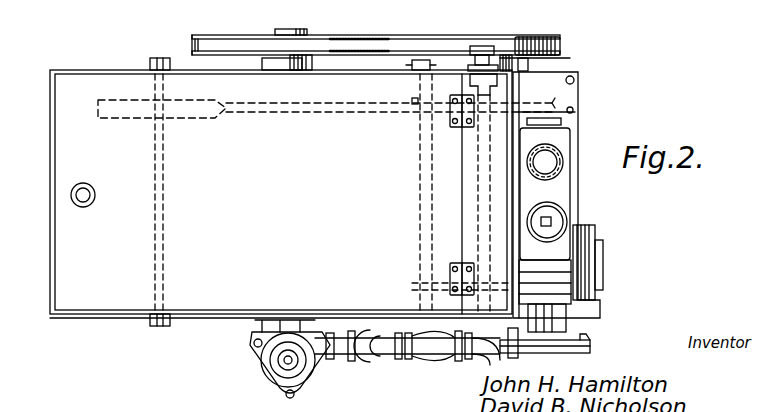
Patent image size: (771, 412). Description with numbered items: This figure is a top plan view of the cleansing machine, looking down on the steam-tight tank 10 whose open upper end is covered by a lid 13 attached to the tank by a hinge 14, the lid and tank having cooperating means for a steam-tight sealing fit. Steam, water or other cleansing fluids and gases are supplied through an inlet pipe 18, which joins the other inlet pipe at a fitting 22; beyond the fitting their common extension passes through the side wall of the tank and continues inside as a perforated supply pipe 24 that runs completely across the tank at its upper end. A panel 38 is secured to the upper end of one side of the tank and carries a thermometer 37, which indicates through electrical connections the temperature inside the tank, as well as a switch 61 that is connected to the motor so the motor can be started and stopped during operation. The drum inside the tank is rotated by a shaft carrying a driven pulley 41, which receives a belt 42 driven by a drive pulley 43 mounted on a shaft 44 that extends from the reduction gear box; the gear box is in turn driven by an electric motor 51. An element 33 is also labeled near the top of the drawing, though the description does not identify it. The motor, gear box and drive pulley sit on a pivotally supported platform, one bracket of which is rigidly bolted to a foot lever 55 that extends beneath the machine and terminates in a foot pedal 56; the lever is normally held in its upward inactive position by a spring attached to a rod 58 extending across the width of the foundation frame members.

The tank 10 is at (223, 321).
The lid 13 is at (112, 292).
The hinge 14 is at (450, 275).
The inlet pipe 18 is at (566, 346).
The fitting 22 is at (437, 348).
The perforated supply pipe 24 is at (478, 158).
The upper slide block 33 is at (300, 33).
The thermometer 37 is at (550, 162).
The panel 38 is at (563, 195).
The driven pulley 41 is at (377, 36).
The belt 42 is at (443, 46).
The drive pulley 43 is at (543, 37).
The shaft 44 is at (547, 56).
The electric motor 51 is at (595, 266).
The foot lever 55 is at (260, 110).
The foot pedal 56 is at (107, 108).
The rod 58 is at (155, 228).
The switch 61 is at (552, 225).